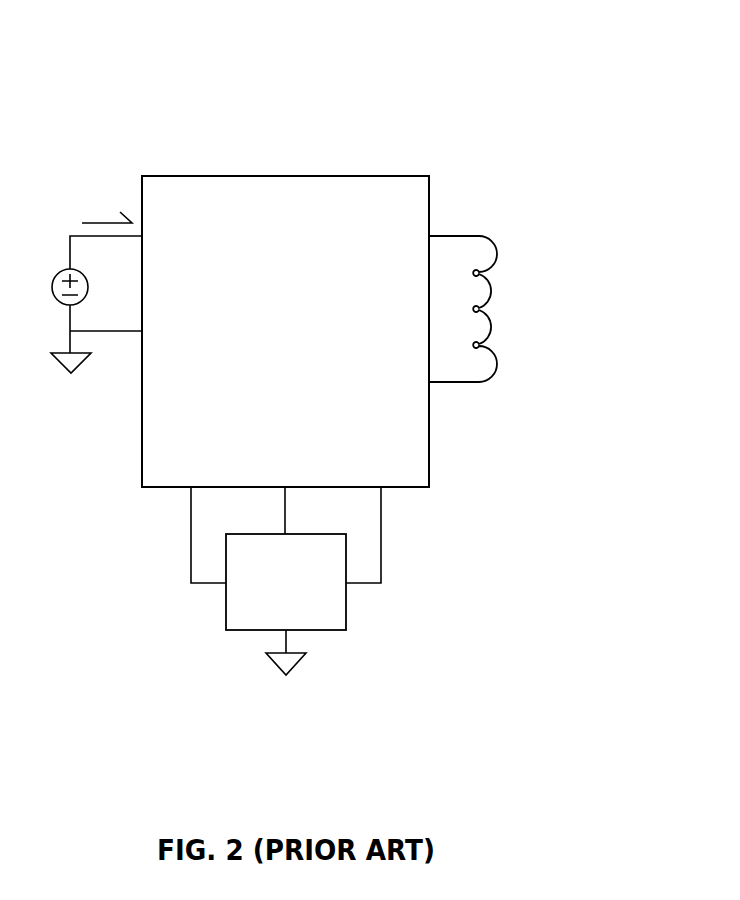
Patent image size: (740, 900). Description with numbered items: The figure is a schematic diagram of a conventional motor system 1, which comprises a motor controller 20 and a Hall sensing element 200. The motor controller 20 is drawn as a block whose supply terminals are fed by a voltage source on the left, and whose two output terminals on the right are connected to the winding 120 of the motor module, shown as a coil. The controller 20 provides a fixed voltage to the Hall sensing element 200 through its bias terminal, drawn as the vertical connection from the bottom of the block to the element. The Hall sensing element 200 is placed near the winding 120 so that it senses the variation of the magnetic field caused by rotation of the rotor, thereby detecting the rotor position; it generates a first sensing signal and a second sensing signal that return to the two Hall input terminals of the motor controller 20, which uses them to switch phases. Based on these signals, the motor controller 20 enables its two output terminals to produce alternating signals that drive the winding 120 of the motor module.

The motor system 1 is at (348, 350).
The motor controller 20 is at (285, 176).
The winding 120 is at (485, 232).
The Hall sensing element 200 is at (346, 606).